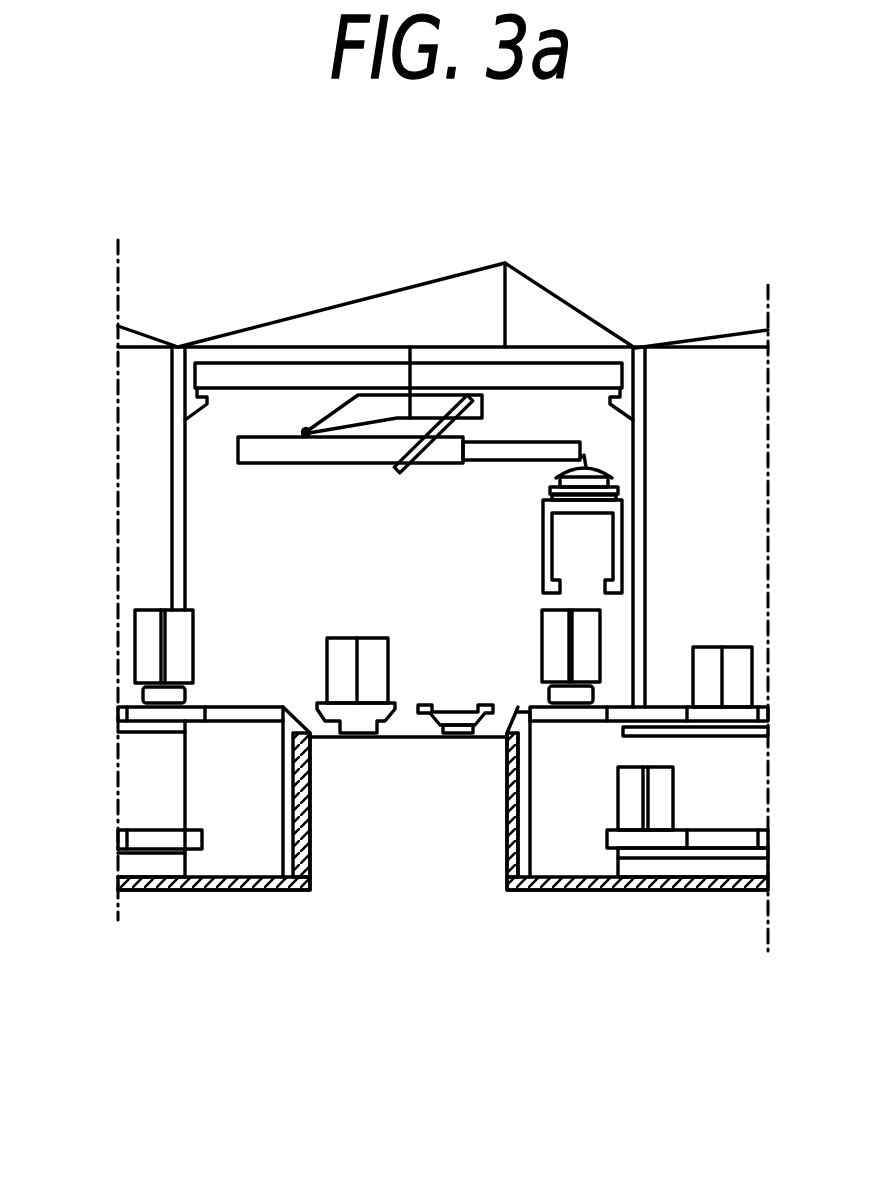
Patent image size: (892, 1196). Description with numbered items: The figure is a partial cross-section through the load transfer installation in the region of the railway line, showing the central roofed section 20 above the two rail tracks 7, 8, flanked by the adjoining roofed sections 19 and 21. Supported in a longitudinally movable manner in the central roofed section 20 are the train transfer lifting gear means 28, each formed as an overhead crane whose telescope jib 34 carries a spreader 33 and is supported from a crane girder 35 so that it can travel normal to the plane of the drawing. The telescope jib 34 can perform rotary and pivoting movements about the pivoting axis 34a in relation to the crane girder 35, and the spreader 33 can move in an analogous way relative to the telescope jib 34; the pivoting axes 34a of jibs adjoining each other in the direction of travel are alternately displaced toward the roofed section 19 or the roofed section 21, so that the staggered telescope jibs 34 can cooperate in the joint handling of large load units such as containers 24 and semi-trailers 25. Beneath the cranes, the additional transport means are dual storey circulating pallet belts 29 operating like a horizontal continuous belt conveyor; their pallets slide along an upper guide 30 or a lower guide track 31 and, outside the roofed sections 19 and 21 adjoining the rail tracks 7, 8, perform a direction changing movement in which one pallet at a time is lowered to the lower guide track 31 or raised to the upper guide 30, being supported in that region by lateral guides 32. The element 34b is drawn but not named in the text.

The rail track 7 is at (460, 737).
The rail track 8 is at (357, 737).
The roofed section 19 is at (703, 375).
The central roofed section 20 is at (238, 407).
The roofed section 21 is at (142, 358).
The container 24 is at (705, 655).
The semi-trailer 25 is at (180, 637).
The train transfer lifting gear means 28 is at (449, 497).
The circulating pallet belt 29 is at (155, 930).
The upper guide 30 is at (722, 736).
The lower guide track 31 is at (673, 853).
The lateral guide 32 is at (285, 803).
The spreader 33 is at (547, 508).
The telescope jib 34 is at (275, 452).
The pivoting axis 34a is at (410, 347).
The flap 34b is at (306, 438).
The crane girder 35 is at (562, 375).